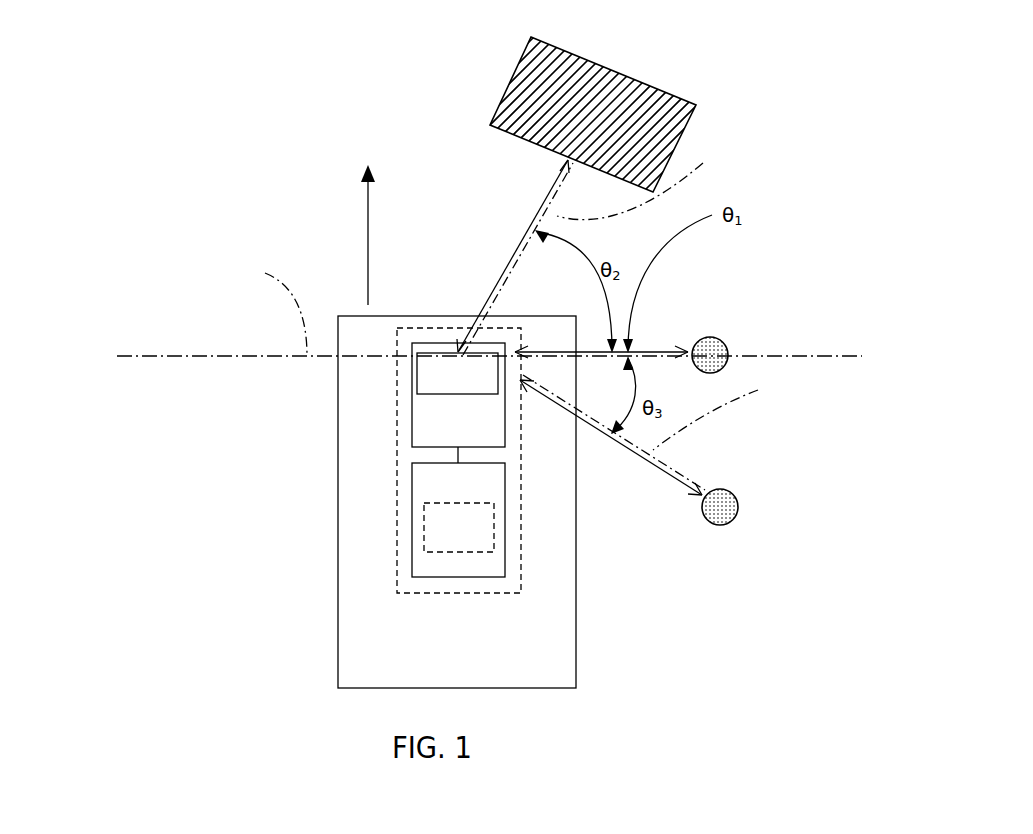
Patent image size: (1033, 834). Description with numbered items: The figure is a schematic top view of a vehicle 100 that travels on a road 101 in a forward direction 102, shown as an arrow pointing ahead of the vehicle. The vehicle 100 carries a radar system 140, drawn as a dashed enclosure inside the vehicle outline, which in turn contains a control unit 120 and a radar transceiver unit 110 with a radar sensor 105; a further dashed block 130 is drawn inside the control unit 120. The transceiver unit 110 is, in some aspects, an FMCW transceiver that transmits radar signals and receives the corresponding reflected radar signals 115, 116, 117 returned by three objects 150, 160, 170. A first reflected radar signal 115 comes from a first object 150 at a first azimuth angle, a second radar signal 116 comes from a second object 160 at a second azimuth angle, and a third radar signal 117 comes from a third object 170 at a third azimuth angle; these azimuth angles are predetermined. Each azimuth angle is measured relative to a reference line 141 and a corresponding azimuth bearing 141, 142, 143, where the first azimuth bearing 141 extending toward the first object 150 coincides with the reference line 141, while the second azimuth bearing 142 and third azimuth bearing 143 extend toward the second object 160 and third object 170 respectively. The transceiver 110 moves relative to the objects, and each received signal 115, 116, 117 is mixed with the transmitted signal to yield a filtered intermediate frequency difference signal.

The vehicle 100 is at (457, 502).
The road 101 is at (255, 523).
The forward direction 102 is at (368, 247).
The radar sensor 105 is at (457, 373).
The radar transceiver unit 110 is at (458, 395).
The first reflected radar signal 115 is at (643, 352).
The second radar signal 116 is at (540, 213).
The third radar signal 117 is at (640, 457).
The control unit 120 is at (458, 520).
The memory 130 is at (459, 527).
The radar system 140 is at (397, 426).
The reference line 141 is at (269, 302).
The second azimuth bearing 142 is at (647, 179).
The third azimuth bearing 143 is at (729, 412).
The first object 150 is at (725, 340).
The second object 160 is at (507, 88).
The third object 170 is at (737, 495).